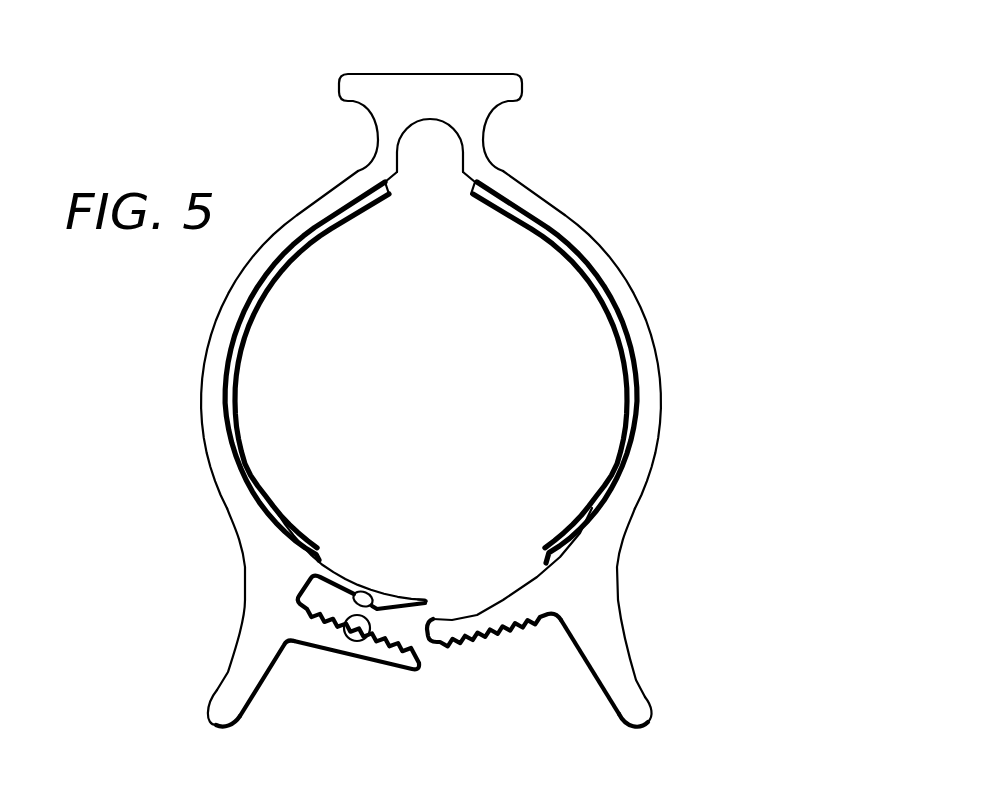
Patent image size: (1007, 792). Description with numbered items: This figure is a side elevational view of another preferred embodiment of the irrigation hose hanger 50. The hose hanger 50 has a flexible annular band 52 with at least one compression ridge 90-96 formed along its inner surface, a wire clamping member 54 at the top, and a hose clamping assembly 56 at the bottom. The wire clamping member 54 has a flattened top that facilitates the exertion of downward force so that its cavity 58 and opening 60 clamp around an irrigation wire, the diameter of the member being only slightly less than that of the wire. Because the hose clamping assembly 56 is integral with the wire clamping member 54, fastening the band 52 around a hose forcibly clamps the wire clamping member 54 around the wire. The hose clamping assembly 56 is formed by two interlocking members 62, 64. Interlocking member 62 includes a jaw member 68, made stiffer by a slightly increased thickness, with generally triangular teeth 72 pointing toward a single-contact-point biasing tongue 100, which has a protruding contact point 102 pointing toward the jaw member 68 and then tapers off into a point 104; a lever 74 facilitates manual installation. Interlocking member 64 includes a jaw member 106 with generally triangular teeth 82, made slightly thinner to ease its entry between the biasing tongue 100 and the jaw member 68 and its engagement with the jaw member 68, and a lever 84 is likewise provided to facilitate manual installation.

The irrigation hose hanger 50 is at (699, 190).
The annular band 52 is at (662, 378).
The wire clamping member 54 is at (328, 127).
The hose clamping assembly 56 is at (687, 588).
The cavity 58 is at (441, 138).
The opening 60 is at (430, 195).
The interlocking member 62 is at (192, 652).
The interlocking member 64 is at (675, 650).
The jaw member 68 is at (383, 677).
The triangular teeth 72 is at (347, 623).
The lever 74 is at (218, 717).
The triangular teeth 82 is at (522, 643).
The lever 84 is at (639, 713).
The compression ridge 90-96 is at (255, 468).
The single-contact-point biasing tongue 100 is at (391, 584).
The protruding contact point 102 is at (361, 591).
The point 104 is at (428, 601).
The jaw member 106 is at (477, 613).